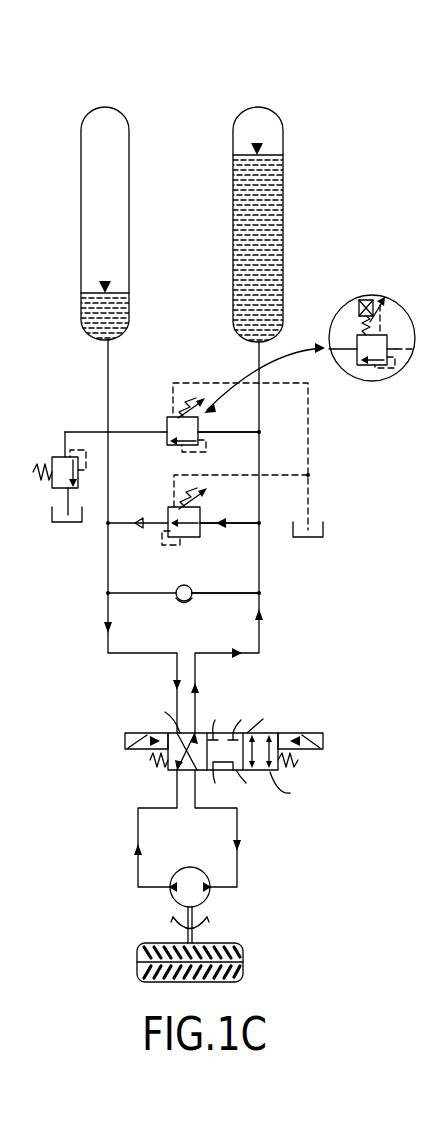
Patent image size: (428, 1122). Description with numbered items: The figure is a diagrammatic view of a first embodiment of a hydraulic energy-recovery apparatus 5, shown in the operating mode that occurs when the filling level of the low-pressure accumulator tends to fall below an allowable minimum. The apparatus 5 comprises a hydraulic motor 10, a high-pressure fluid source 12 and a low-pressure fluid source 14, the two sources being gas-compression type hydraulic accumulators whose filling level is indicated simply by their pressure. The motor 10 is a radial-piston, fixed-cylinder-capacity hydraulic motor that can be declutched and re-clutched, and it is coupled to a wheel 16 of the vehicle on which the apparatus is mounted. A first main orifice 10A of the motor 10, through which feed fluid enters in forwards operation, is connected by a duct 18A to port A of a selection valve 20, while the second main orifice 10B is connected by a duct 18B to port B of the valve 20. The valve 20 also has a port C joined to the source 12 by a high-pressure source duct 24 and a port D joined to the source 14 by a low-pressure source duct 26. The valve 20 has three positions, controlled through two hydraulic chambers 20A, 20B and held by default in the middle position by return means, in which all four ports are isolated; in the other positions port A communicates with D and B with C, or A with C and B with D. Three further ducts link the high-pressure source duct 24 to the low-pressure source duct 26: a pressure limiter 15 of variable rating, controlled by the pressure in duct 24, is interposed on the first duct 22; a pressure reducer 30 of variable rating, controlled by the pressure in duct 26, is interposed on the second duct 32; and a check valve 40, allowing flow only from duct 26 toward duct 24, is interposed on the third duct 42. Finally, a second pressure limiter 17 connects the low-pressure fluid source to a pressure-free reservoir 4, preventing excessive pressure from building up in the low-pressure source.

The hydraulic energy-recovery apparatus 5 is at (177, 98).
The low-pressure fluid source 14 is at (90, 240).
The high-pressure fluid source 12 is at (265, 242).
The pressure limiter 15 is at (167, 427).
The first duct 22 is at (207, 434).
The second pressure limiter 17 is at (52, 459).
The pressure-free reservoir 4 is at (52, 517).
The pressure reducer 30 is at (168, 512).
The second duct 32 is at (210, 525).
The check valve 40 is at (184, 587).
The third duct 42 is at (208, 594).
The low-pressure source duct 26 is at (108, 624).
The high-pressure source duct 24 is at (260, 622).
The selection valve 20 is at (123, 726).
The hydraulic chamber 20A is at (323, 741).
The hydraulic chamber 20B is at (128, 749).
The duct 18A is at (240, 845).
The duct 18B is at (138, 850).
The hydraulic motor 10 is at (190, 868).
The first main orifice 10A is at (208, 888).
The second main orifice 10B is at (170, 888).
The wheel 16 is at (243, 958).